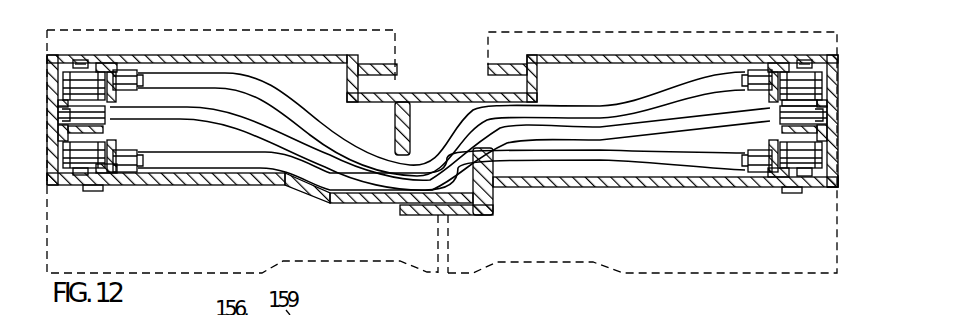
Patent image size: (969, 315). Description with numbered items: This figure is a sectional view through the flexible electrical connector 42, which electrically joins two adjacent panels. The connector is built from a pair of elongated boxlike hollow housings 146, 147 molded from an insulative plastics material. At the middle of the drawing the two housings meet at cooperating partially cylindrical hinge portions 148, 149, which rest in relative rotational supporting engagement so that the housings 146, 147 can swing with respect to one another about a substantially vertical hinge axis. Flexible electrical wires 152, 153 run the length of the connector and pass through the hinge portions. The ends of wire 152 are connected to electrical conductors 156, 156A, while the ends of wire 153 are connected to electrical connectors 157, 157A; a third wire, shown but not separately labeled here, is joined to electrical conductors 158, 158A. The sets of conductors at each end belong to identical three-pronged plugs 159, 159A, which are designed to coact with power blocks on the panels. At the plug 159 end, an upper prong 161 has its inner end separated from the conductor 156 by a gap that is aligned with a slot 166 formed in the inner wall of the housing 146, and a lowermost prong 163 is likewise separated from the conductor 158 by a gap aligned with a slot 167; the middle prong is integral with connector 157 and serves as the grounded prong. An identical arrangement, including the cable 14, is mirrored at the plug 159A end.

The cable 14 is at (713, 160).
The flexible electrical connector 42 is at (753, 274).
The hollow housing 146 is at (640, 192).
The hollow housing 147 is at (238, 190).
The hinge portion 148 is at (493, 203).
The hinge portion 149 is at (400, 128).
The flexible electrical wire 152 is at (650, 80).
The flexible electrical wire 153 is at (238, 127).
The electrical conductor 156 is at (812, 62).
The electrical conductor 156A is at (83, 62).
The electrical connector 157 is at (810, 114).
The electrical connector 157A is at (84, 115).
The electrical conductor 158 is at (805, 175).
The electrical conductor 158A is at (82, 185).
The three-pronged plug 159 is at (801, 113).
The three-pronged plug 159A is at (113, 111).
The upper prong 161 is at (820, 102).
The lowermost prong 163 is at (810, 153).
The slot 166 is at (818, 82).
The slot 167 is at (823, 177).